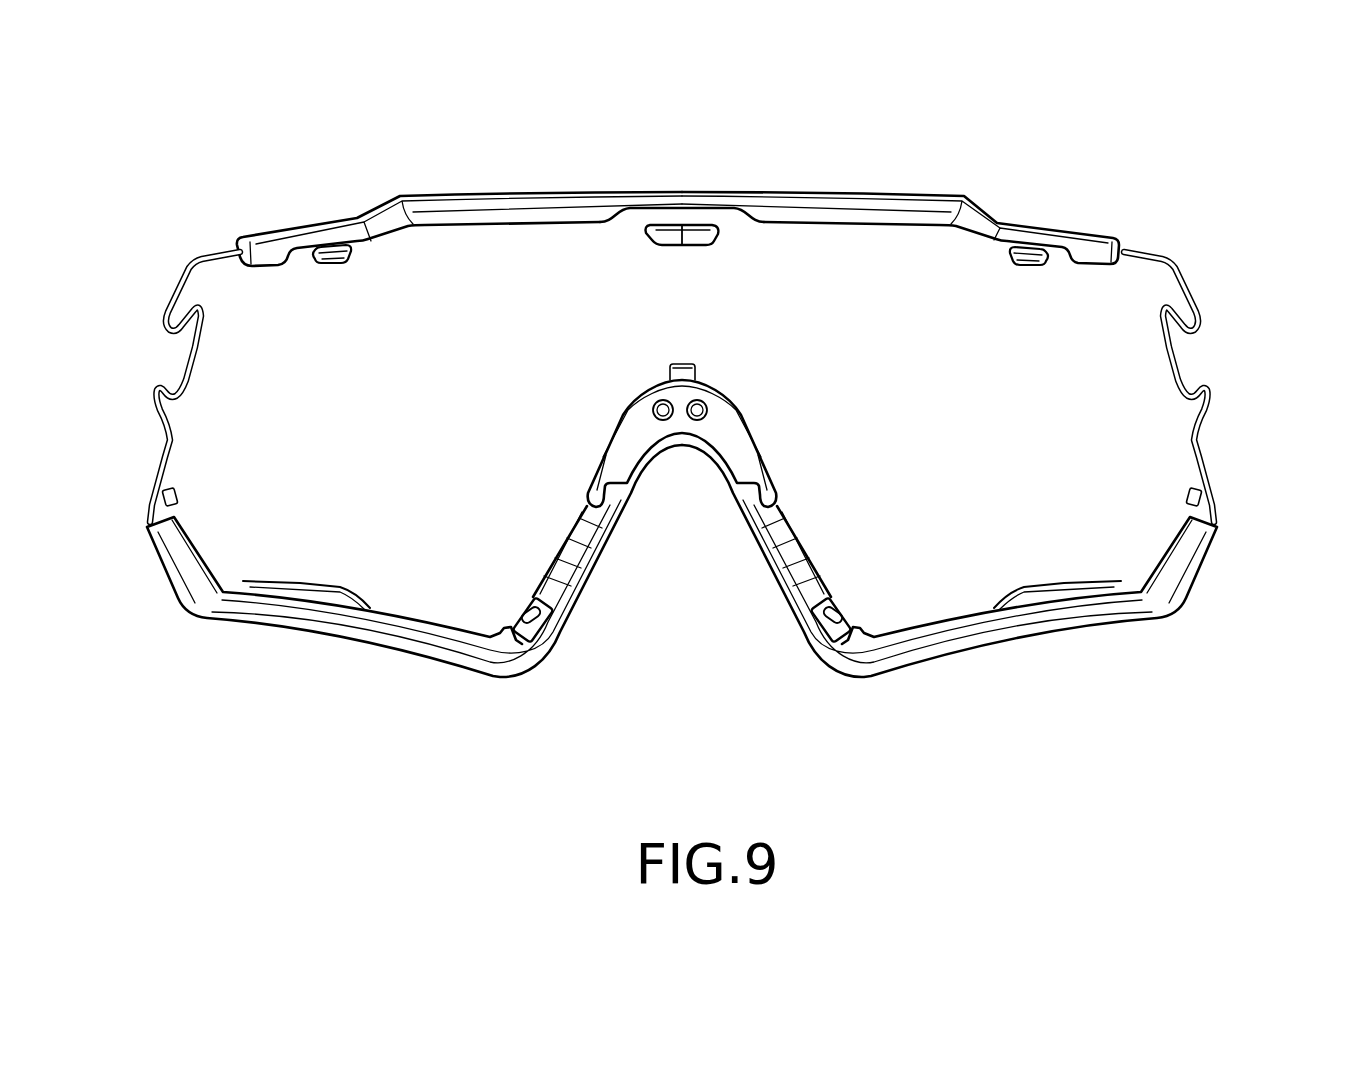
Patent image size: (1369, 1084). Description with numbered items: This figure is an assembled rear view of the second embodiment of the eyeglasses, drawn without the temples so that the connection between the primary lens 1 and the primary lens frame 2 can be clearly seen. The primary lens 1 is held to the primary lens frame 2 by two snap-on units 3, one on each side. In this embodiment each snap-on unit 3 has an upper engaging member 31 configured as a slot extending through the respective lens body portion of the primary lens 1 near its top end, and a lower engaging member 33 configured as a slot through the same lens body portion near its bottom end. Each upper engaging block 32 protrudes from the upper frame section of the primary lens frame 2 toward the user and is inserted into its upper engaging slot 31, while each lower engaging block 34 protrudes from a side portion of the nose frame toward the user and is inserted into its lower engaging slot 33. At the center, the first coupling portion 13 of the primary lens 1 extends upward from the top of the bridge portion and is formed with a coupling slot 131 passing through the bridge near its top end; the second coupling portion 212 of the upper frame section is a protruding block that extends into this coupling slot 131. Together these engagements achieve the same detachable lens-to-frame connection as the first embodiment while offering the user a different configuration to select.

The primary lens 1 is at (1242, 275).
The primary lens frame 2 is at (152, 608).
The snap-on unit 3 is at (316, 224).
The first coupling portion 13 is at (712, 218).
The coupling slot 131 is at (657, 243).
The second coupling portion 212 is at (683, 243).
The upper engaging member 31 is at (352, 256).
The upper engaging block 32 is at (327, 265).
The lower engaging member 33 is at (536, 601).
The lower engaging block 34 is at (521, 616).